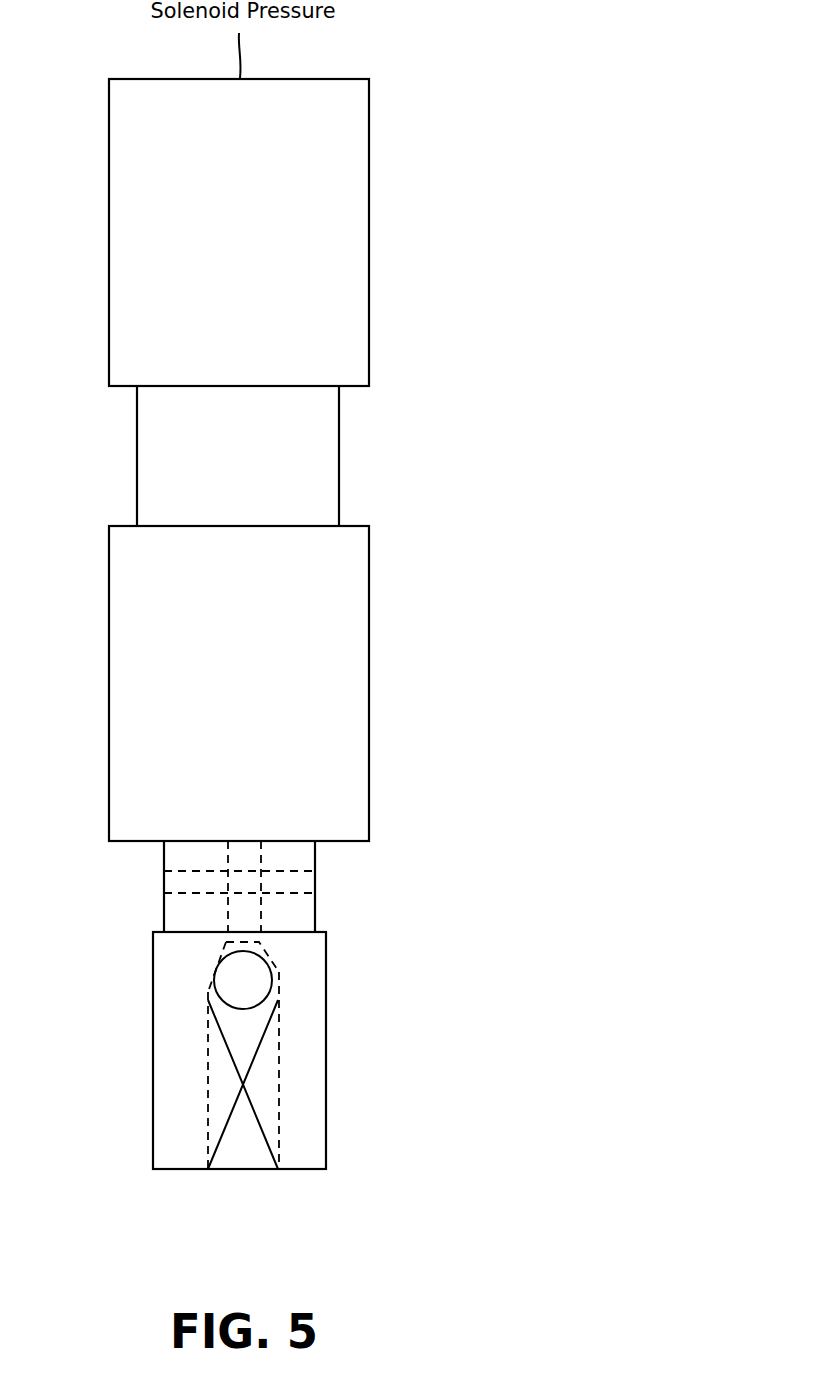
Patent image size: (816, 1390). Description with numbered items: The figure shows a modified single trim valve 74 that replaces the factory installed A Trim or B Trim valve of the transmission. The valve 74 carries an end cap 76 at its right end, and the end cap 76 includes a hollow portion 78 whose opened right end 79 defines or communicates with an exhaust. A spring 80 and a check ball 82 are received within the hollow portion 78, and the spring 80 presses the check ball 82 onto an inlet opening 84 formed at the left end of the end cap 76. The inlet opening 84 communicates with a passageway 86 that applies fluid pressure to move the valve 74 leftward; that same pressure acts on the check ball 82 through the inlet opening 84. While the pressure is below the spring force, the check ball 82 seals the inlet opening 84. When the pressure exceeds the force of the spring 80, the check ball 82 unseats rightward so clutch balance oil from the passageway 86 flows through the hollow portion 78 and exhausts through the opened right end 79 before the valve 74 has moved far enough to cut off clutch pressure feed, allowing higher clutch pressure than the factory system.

The modified single trim valve 74 is at (388, 437).
The end cap 76 is at (338, 1052).
The hollow portion 78 is at (264, 1102).
The opened right end 79 is at (243, 1171).
The spring 80 is at (243, 1085).
The check ball 82 is at (215, 982).
The inlet opening 84 is at (244, 936).
The passageway 86 is at (316, 880).